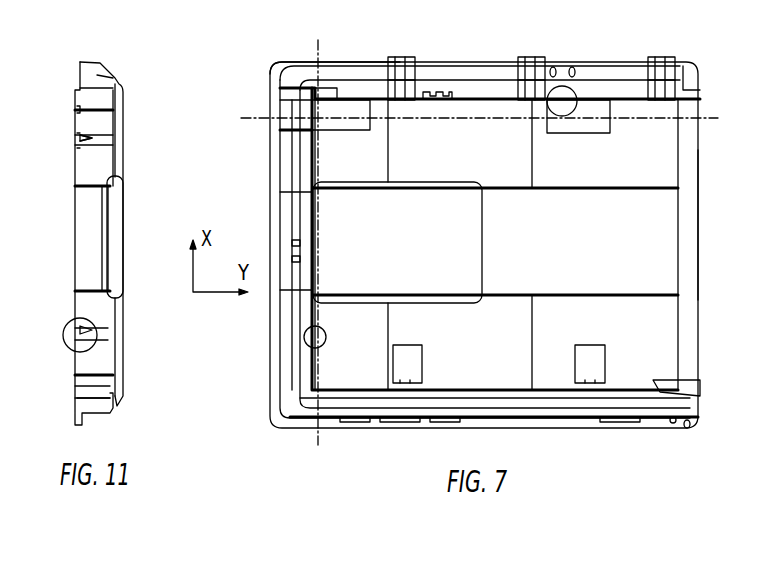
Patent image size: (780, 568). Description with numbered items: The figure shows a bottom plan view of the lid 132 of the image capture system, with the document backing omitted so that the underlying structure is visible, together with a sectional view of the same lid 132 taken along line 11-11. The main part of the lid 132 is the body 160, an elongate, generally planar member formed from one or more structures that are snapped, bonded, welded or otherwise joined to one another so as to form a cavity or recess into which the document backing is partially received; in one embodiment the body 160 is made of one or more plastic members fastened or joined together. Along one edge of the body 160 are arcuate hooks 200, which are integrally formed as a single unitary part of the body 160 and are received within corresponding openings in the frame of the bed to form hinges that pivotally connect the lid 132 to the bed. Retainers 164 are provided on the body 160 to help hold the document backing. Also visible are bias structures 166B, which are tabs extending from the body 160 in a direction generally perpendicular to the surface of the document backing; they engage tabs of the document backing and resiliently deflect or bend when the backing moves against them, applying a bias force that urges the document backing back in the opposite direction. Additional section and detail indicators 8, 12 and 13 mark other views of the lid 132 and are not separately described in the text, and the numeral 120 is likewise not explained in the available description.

In FIG. 7, the housing assembly 120 is at (249, 57).
In FIG. 11, the body 160 is at (97, 75).
In FIG. 7, the body 160 is at (687, 232).
In FIG. 7, the retainers 164 is at (328, 92).
In FIG. 11, the bias structures 166B is at (78, 135).
In FIG. 7, the arcuate hooks 200 is at (396, 57).
In FIG. 11, the lid 132 is at (62, 402).
In FIG. 7, the section line 8- 8 is at (241, 118).
In FIG. 7, the line 11- 11 is at (318, 40).
In FIG. 7, the detail circle 12 is at (324, 335).
In FIG. 11, the detail circle 13 is at (69, 332).